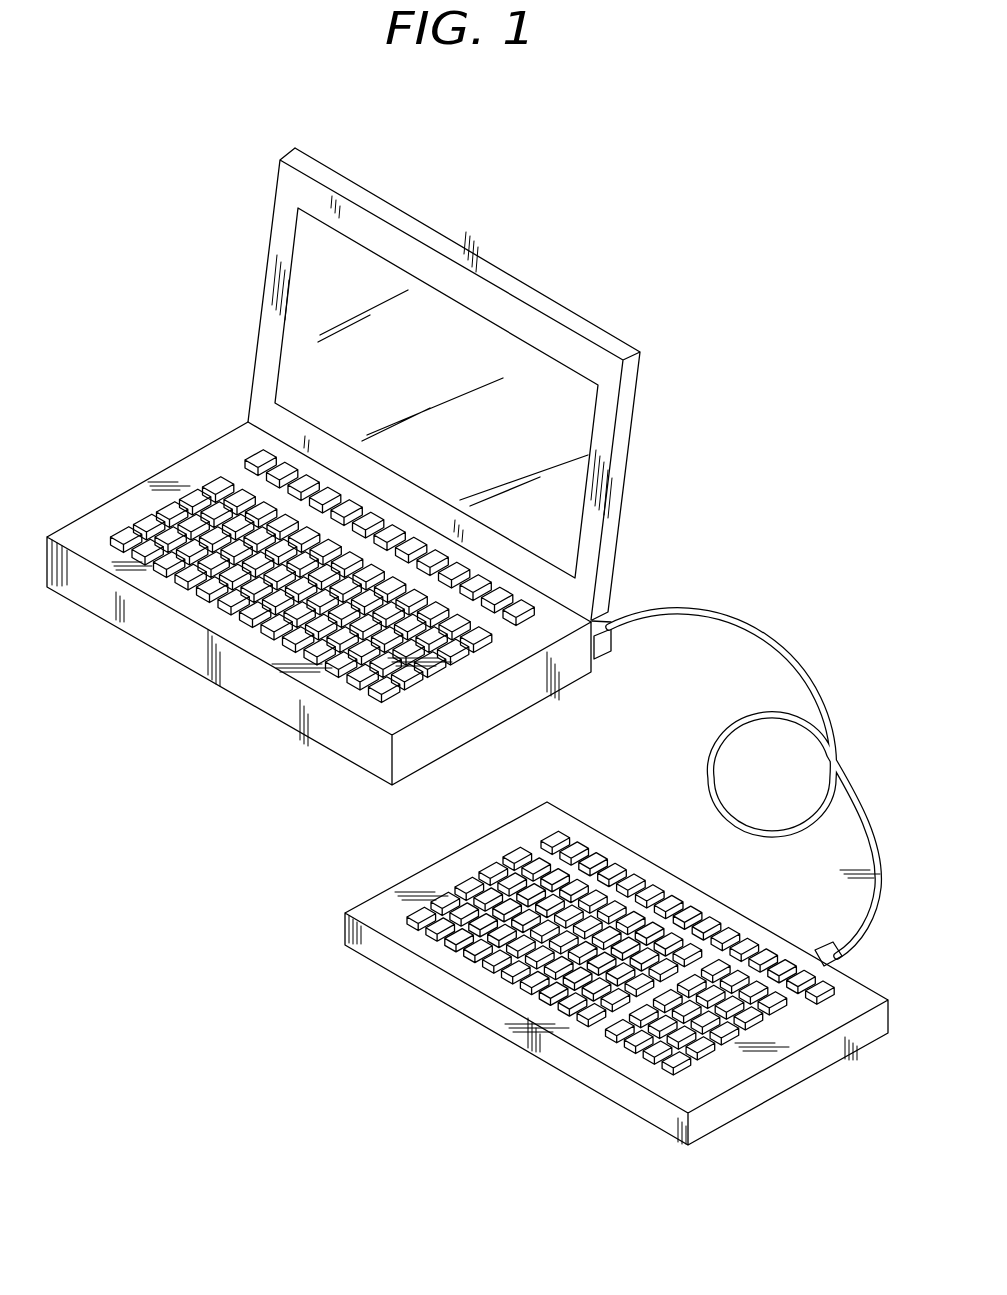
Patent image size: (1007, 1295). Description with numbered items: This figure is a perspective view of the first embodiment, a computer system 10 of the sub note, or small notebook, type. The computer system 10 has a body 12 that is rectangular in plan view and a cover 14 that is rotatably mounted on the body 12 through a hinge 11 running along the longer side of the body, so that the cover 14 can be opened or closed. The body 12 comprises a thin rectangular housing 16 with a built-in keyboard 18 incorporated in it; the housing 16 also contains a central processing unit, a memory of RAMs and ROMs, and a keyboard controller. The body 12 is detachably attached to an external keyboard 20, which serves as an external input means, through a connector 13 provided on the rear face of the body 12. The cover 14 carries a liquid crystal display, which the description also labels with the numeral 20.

The computer system 10 is at (402, 498).
The hinge 11 is at (614, 622).
The body 12 is at (298, 557).
The connector 13 is at (593, 660).
The cover 14 is at (645, 493).
The housing 16 is at (448, 730).
The built-in keyboard 18 is at (234, 596).
The external keyboard 20 is at (296, 340).